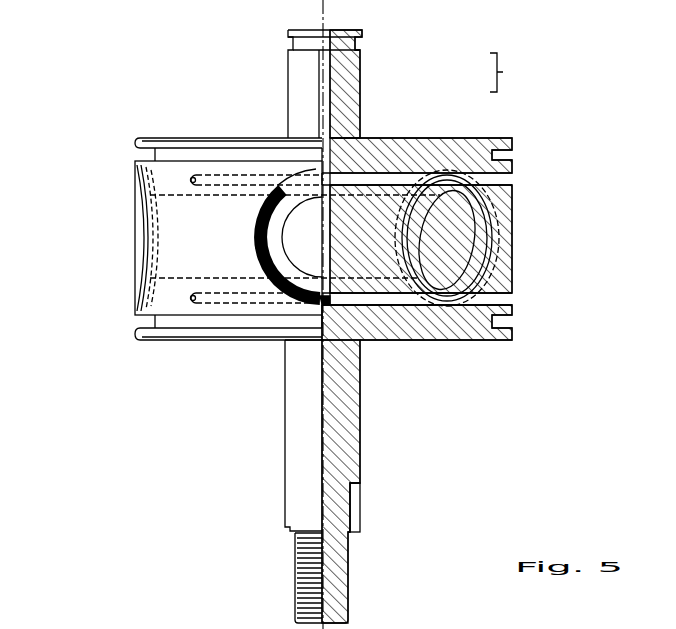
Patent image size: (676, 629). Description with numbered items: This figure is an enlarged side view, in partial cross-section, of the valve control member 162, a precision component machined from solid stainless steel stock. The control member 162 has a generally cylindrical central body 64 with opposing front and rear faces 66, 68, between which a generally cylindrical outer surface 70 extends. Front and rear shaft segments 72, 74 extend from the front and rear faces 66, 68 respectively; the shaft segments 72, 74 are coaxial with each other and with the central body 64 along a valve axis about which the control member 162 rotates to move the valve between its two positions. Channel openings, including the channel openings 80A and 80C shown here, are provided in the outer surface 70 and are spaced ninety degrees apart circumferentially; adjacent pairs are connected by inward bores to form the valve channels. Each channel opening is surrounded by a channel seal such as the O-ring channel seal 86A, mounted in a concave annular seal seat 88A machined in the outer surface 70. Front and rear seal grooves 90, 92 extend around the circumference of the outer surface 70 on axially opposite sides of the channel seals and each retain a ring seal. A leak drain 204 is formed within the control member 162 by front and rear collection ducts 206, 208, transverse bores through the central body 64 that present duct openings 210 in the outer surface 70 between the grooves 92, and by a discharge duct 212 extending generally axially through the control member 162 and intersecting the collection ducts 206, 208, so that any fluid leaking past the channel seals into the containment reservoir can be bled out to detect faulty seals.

The valve control member 162 is at (560, 55).
The rear shaft segment 74 is at (341, 95).
The front shaft segment 72 is at (341, 456).
The discharge duct 212 is at (336, 147).
The rear collection duct 208 is at (405, 172).
The front collection duct 206 is at (432, 205).
The leak drain 204 is at (509, 72).
The rear seal groove 92 is at (500, 155).
The front seal groove 90 is at (505, 331).
The duct openings 210 is at (190, 180).
The channel opening 80C is at (450, 237).
The channel opening 80A is at (308, 237).
The channel seal 86A is at (256, 222).
The seal seat 88A is at (298, 178).
The rear face 68 is at (207, 138).
The front face 66 is at (192, 341).
The central body 64 is at (67, 165).
The outer surface 70 is at (136, 190).